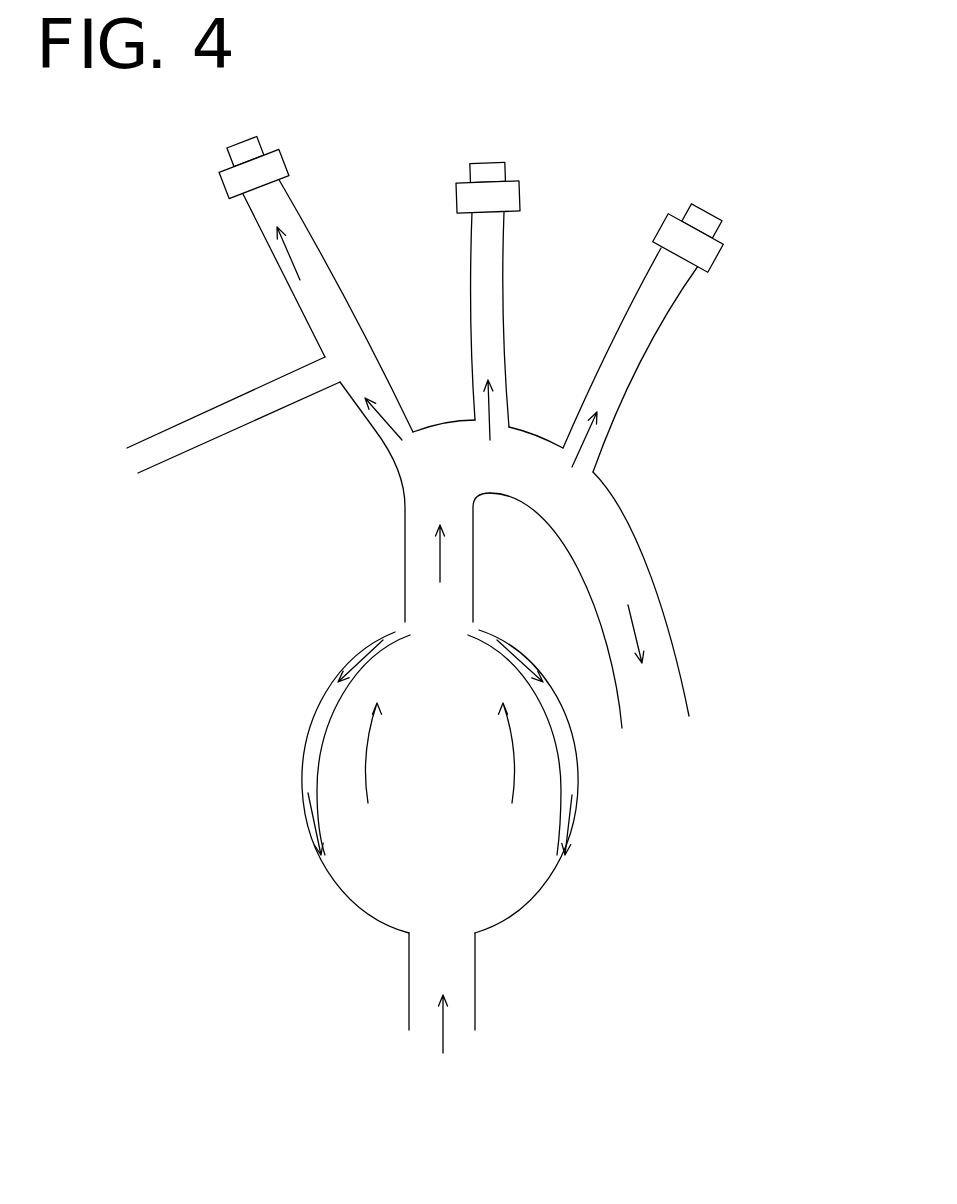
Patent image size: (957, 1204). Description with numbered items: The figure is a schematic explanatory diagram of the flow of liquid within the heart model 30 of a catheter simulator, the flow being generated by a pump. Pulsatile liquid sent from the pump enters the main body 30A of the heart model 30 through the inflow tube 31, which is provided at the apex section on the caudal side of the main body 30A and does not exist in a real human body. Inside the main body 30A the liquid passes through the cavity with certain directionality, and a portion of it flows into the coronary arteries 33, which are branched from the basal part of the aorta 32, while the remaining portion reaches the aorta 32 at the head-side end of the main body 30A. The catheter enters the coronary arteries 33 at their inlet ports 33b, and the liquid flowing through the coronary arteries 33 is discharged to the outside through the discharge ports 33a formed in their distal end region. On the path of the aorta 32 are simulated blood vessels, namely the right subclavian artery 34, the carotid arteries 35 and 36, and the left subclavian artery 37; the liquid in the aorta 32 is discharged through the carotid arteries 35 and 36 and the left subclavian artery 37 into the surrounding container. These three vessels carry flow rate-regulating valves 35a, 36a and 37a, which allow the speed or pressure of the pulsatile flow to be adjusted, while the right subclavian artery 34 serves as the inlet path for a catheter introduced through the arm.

The heart model 30 is at (558, 924).
The main body 30A is at (370, 915).
The inflow tube 31 is at (475, 997).
The aorta 32 is at (608, 508).
The coronary arteries 33 is at (310, 737).
The discharge ports 33a is at (323, 853).
The inlet ports 33b is at (397, 630).
The right subclavian artery 34 is at (182, 432).
The carotid artery 35 is at (280, 212).
The flow rate-regulating valve 35a is at (278, 162).
The carotid artery 36 is at (487, 283).
The flow rate-regulating valve 36a is at (510, 200).
The left subclavian artery 37 is at (643, 332).
The flow rate-regulating valve 37a is at (708, 252).